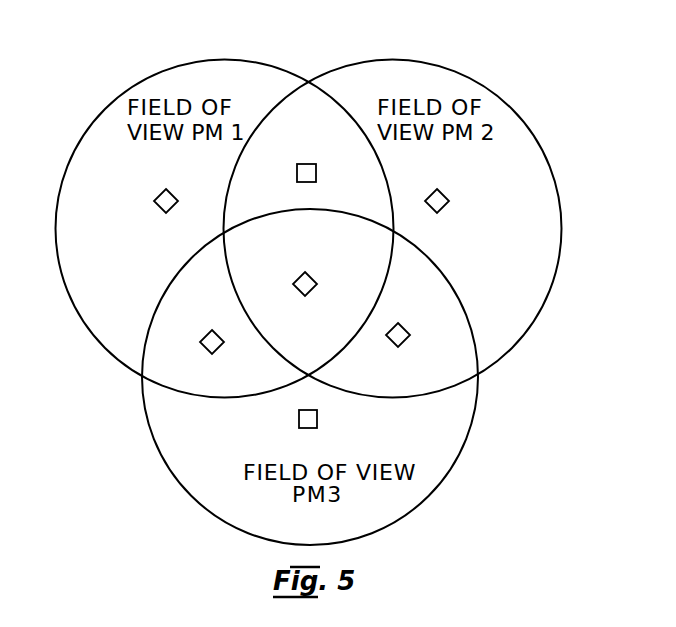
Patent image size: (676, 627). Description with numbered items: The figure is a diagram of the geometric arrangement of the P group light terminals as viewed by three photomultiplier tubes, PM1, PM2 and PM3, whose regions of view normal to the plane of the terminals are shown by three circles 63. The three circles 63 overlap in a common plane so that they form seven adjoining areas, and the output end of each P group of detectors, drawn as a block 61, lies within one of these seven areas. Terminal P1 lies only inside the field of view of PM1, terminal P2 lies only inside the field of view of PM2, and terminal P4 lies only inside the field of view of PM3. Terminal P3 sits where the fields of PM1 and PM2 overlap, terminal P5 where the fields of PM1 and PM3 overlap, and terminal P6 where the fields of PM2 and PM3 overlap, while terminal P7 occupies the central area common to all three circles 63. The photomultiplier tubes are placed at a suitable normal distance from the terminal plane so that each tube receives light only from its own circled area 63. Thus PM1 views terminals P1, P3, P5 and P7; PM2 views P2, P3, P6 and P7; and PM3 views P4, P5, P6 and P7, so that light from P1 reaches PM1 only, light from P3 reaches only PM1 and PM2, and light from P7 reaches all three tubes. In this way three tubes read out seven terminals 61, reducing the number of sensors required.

The P group light terminal 61 is at (305, 300).
The field of view circle 63 is at (86, 125).
The terminal P-1 P1 is at (167, 189).
The terminal P-2 P2 is at (438, 189).
The terminal P-3 P3 is at (307, 162).
The terminal P-4 P4 is at (308, 433).
The terminal P-5 P5 is at (211, 331).
The terminal P-6 P6 is at (399, 325).
The terminal P-7 P7 is at (307, 272).